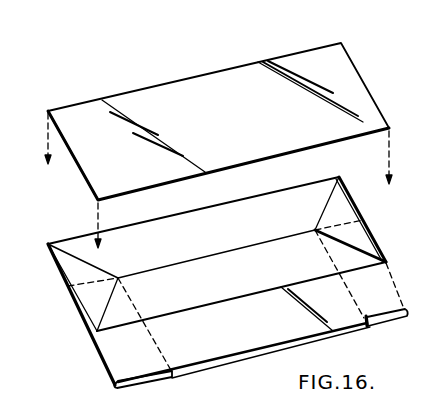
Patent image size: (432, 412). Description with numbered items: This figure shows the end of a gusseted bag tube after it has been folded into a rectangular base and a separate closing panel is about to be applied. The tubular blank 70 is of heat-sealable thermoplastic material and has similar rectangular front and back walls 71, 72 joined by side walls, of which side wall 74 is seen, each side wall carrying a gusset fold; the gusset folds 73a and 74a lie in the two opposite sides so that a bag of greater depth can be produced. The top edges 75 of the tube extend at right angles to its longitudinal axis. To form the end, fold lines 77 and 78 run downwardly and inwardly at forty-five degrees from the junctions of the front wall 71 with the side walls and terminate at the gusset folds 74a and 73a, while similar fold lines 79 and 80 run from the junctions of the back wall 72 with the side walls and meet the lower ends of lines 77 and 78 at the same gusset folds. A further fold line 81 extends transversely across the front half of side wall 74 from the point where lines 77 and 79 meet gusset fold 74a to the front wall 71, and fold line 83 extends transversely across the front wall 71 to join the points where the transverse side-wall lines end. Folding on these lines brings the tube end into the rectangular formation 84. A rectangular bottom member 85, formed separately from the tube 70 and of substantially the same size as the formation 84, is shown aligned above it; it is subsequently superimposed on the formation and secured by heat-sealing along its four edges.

The tubular blank 70 is at (278, 366).
The front wall 71 is at (270, 330).
The back wall 72 is at (197, 371).
The gusset fold 73a is at (180, 349).
The side wall 74 is at (0, 266).
The gusset fold 74a is at (352, 298).
The top edges 75 is at (217, 204).
The fold line 77 is at (0, 160).
The fold line 78 is at (118, 285).
The fold line 79 is at (323, 212).
The fold line 80 is at (94, 265).
The fold line 81 is at (0, 197).
The fold line 83 is at (243, 243).
The rectangular formation 84 is at (324, 172).
The rectangular bottom member 85 is at (252, 120).